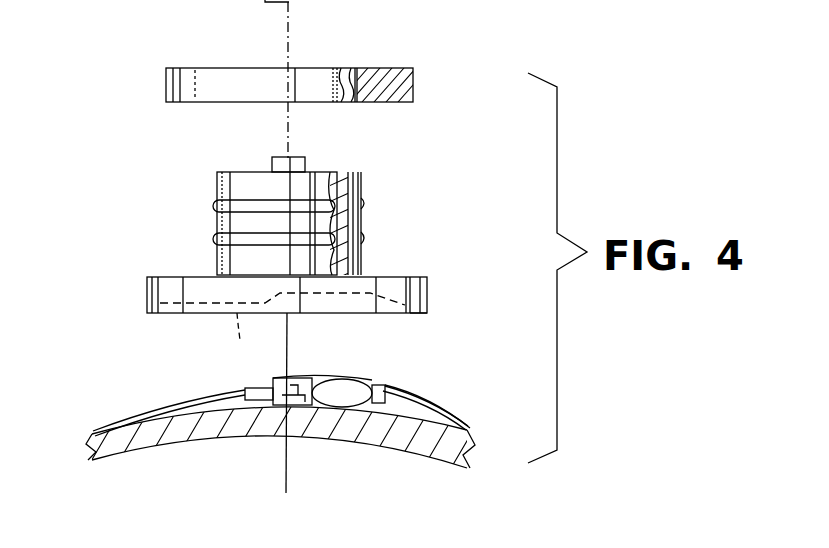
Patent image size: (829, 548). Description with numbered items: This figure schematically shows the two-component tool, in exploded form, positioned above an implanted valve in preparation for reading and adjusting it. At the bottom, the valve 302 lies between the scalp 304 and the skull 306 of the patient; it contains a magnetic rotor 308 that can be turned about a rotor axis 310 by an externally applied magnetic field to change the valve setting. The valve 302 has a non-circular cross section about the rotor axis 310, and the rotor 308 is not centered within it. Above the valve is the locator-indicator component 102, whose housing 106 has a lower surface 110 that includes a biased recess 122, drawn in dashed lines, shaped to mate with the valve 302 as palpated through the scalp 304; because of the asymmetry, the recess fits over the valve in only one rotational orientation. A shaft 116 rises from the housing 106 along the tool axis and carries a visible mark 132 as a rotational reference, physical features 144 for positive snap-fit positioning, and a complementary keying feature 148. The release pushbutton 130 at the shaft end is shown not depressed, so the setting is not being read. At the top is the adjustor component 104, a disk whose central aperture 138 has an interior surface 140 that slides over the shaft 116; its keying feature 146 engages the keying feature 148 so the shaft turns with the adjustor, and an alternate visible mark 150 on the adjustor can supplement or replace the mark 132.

The locator-indicator component 102 is at (147, 296).
The adjustor component 104 is at (160, 83).
The housing 106 is at (410, 276).
The lower surface 110 is at (415, 313).
The shaft 116 is at (216, 222).
The biased recess 122 is at (238, 341).
The pushbutton 130 is at (305, 164).
The visible mark 132 is at (312, 258).
The central aperture 138 is at (348, 68).
The interior surface 140 is at (385, 88).
The physical features 144 is at (215, 205).
The keying feature 146 is at (360, 78).
The complementary keying feature 148 is at (362, 215).
The alternate visible mark 150 is at (334, 82).
The valve 302 is at (368, 380).
The scalp 304 is at (440, 405).
The skull 306 is at (167, 440).
The magnetic rotor 308 is at (298, 383).
The rotor axis 310 is at (286, 478).